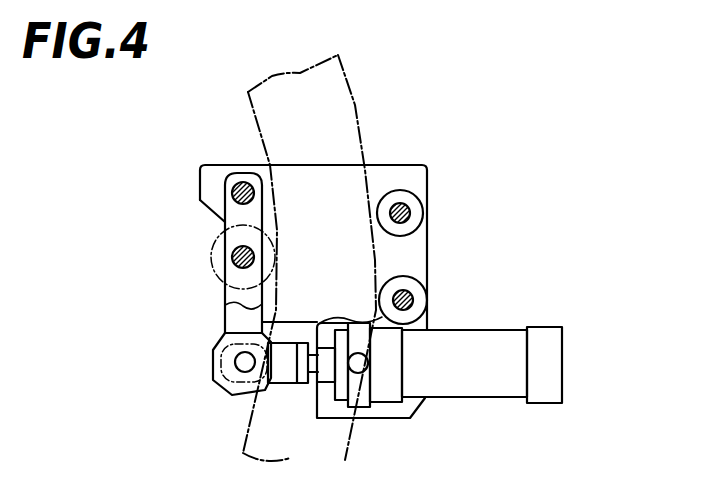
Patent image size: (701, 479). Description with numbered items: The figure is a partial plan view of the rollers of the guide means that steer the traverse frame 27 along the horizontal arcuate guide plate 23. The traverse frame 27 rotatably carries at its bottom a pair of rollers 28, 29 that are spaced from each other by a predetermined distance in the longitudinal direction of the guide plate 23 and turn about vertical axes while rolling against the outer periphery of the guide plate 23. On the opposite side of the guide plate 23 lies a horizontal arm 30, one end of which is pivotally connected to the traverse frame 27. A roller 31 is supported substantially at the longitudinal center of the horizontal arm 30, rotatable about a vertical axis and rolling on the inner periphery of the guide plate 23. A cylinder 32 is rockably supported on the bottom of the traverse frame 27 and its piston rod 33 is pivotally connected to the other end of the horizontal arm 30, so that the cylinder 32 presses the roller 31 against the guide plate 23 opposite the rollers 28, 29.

The arcuate guide plate 23 is at (345, 73).
The traverse frame 27 is at (400, 168).
The roller 28 is at (422, 210).
The roller 29 is at (427, 300).
The horizontal arm 30 is at (232, 318).
The roller 31 is at (215, 243).
The cylinder 32 is at (485, 388).
The piston rod 33 is at (283, 377).